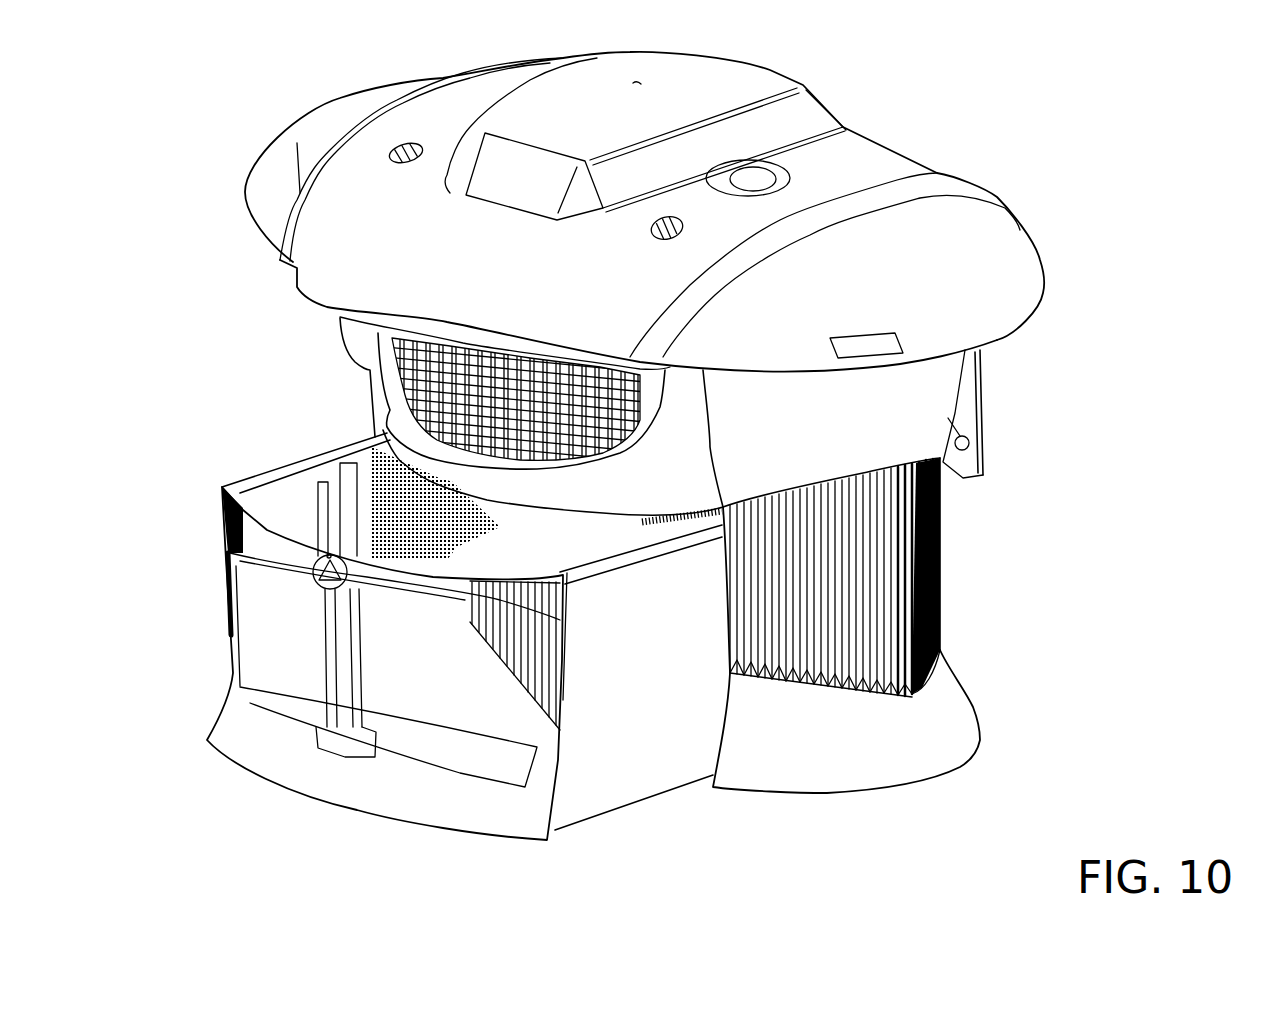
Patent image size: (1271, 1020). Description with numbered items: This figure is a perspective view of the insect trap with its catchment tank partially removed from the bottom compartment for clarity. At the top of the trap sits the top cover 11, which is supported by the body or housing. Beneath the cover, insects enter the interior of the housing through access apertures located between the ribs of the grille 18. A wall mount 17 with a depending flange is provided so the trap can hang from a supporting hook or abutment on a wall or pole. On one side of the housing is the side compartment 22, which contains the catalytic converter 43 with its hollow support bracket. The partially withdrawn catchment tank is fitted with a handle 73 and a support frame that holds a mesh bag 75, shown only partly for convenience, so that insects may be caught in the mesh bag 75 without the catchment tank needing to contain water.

The top cover 11 is at (773, 72).
The wall mount 17 is at (982, 400).
The grille 18 is at (383, 360).
The side compartment 22 is at (887, 580).
The catalytic converter 43 is at (913, 713).
The mesh bag 75 is at (340, 450).
The handle 73 is at (330, 733).